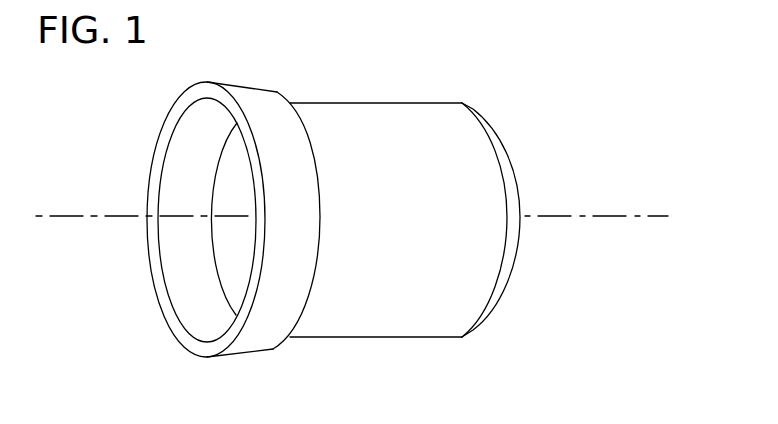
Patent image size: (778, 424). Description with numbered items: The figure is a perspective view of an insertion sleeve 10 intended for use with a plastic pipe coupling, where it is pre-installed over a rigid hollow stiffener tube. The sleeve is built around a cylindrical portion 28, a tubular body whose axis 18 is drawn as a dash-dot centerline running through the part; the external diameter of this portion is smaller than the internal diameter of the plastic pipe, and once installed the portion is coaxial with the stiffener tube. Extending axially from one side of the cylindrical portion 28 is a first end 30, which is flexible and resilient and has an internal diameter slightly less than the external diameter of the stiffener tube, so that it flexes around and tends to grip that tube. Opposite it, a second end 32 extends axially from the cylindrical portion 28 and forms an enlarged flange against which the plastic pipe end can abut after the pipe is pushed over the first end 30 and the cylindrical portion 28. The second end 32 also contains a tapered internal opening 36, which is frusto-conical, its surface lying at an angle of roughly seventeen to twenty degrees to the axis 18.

The insertion sleeve 10 is at (603, 139).
The axis 18 is at (602, 217).
The cylindrical portion 28 is at (366, 114).
The first end 30 is at (498, 123).
The second end 32 is at (218, 82).
The tapered internal opening 36 is at (185, 165).